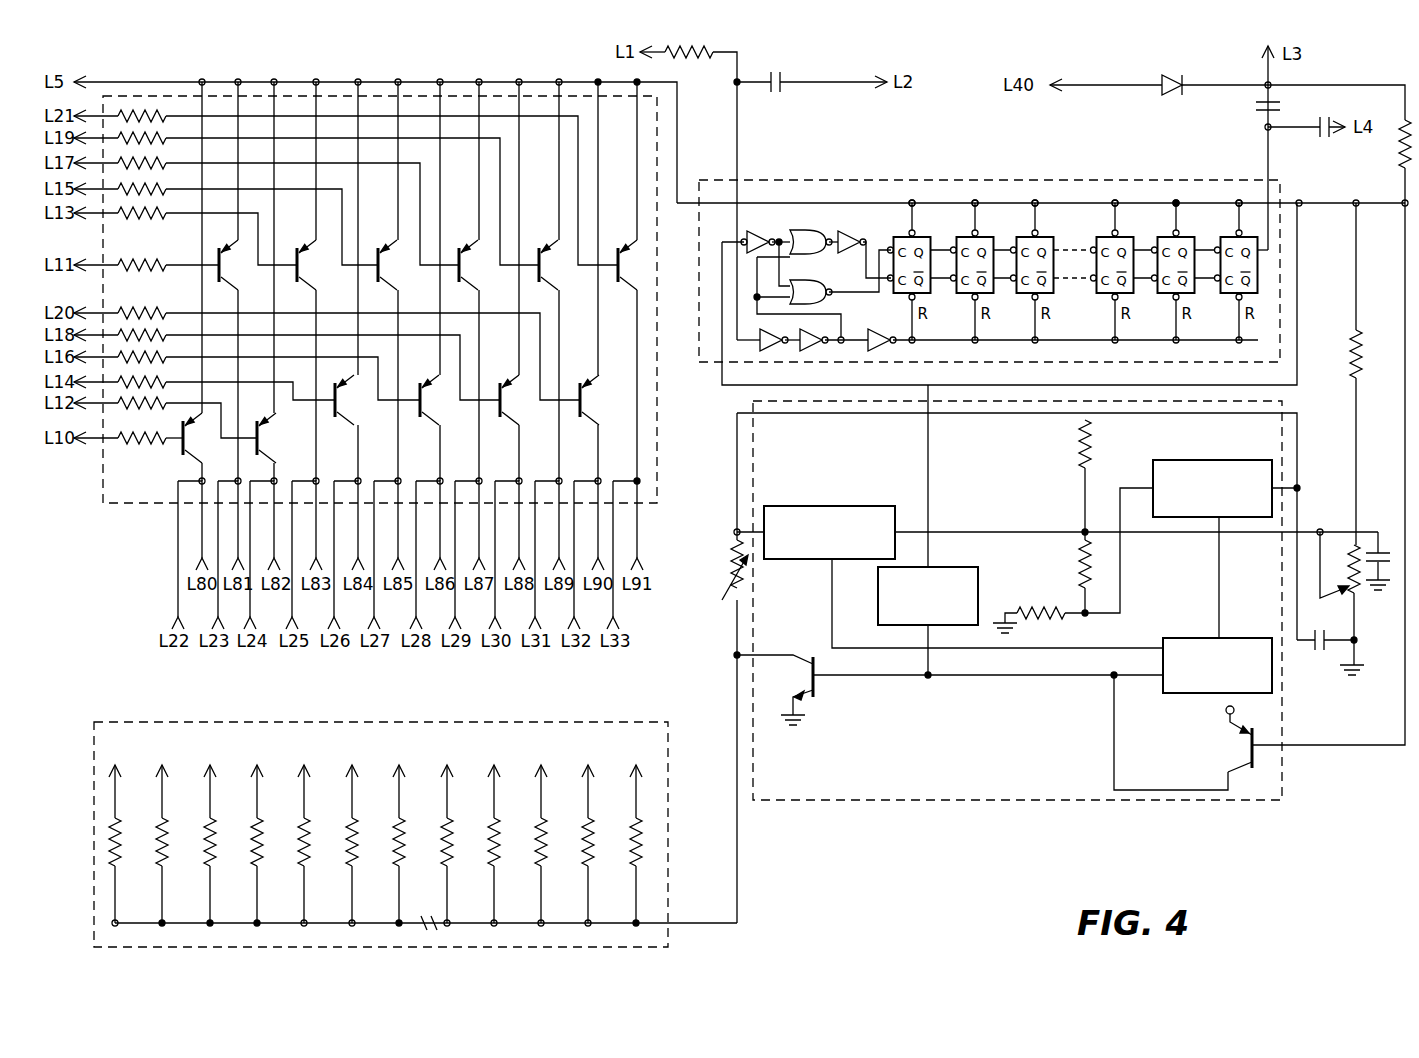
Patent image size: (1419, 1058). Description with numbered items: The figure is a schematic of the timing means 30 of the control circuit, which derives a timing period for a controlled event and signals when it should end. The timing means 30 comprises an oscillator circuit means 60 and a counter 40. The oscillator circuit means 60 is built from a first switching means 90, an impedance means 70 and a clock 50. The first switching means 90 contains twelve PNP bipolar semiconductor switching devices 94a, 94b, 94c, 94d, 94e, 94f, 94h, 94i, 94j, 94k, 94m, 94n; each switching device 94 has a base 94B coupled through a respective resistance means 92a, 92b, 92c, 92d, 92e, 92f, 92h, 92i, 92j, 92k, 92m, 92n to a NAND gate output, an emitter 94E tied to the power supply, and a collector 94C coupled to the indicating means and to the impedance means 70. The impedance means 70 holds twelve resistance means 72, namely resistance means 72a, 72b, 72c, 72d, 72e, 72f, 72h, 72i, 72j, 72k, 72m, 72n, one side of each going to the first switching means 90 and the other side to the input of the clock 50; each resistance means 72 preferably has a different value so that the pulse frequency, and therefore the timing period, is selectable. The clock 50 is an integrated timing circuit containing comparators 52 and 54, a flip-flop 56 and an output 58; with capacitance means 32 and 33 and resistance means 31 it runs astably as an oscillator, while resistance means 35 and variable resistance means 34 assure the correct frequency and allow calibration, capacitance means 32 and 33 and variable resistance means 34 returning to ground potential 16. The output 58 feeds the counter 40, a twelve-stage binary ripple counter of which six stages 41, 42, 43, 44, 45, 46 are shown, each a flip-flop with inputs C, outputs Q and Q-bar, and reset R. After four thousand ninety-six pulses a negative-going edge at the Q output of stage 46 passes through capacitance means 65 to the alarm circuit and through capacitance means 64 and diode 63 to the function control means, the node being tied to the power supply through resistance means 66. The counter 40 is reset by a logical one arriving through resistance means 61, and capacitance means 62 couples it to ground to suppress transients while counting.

The ground potential 16 is at (1390, 600).
The timing means 30 is at (784, 838).
The resistance means 31 is at (732, 602).
The capacitance means 32 is at (1314, 656).
The capacitance means 33 is at (1380, 530).
The variable resistance means 34 is at (1362, 618).
The resistance means 35 is at (1358, 390).
The counter 40 is at (1023, 180).
The stage 41 is at (900, 234).
The stage 42 is at (962, 236).
The stage 43 is at (1026, 236).
The stage 44 is at (1095, 238).
The stage 45 is at (1168, 271).
The stage 46 is at (1231, 271).
The clock 50 is at (1040, 800).
The comparator 52 is at (834, 506).
The comparator 54 is at (1228, 460).
The flip-flop 56 is at (1228, 638).
The output 58 is at (978, 580).
The oscillator circuit means 60 is at (676, 298).
The resistance means 61 is at (695, 62).
The capacitance means 62 is at (784, 92).
The diode 63 is at (1170, 96).
The capacitance means 64 is at (1255, 111).
The capacitance means 65 is at (1330, 120).
The resistance means 66 is at (1400, 165).
The impedance means 70 is at (608, 722).
The resistance means 72 is at (660, 796).
The resistance means 72a is at (118, 858).
The resistance means 72b is at (165, 858).
The resistance means 72c is at (213, 858).
The resistance means 72d is at (260, 858).
The resistance means 72e is at (307, 858).
The resistance means 72f is at (355, 858).
The resistance means 72h is at (402, 858).
The resistance means 72i is at (450, 858).
The resistance means 72j is at (497, 858).
The resistance means 72k is at (544, 858).
The resistance means 72m is at (591, 858).
The resistance means 72n is at (636, 818).
The first switching means 90 is at (103, 503).
The resistance means 92a is at (150, 451).
The resistance means 92b is at (168, 254).
The resistance means 92c is at (187, 411).
The resistance means 92d is at (207, 236).
The resistance means 92e is at (226, 381).
The resistance means 92f is at (247, 224).
The resistance means 92h is at (268, 369).
The resistance means 92i is at (288, 211).
The resistance means 92j is at (308, 358).
The resistance means 92k is at (328, 198).
The resistance means 92m is at (348, 343).
The resistance means 92n is at (367, 187).
The bipolar semiconductor switching device 94 is at (386, 226).
The bipolar semiconductor switching device 94a is at (202, 281).
The bipolar semiconductor switching device 94b is at (239, 281).
The bipolar semiconductor switching device 94c is at (276, 281).
The bipolar semiconductor switching device 94d is at (317, 281).
The bipolar semiconductor switching device 94e is at (353, 281).
The bipolar semiconductor switching device 94f is at (395, 281).
The bipolar semiconductor switching device 94h is at (439, 281).
The bipolar semiconductor switching device 94i is at (475, 281).
The bipolar semiconductor switching device 94j is at (516, 281).
The bipolar semiconductor switching device 94k is at (557, 281).
The bipolar semiconductor switching device 94m is at (602, 281).
The bipolar semiconductor switching device 94n is at (612, 284).
The emitter 94E is at (196, 414).
The base 94B is at (181, 440).
The collector 94C is at (197, 458).